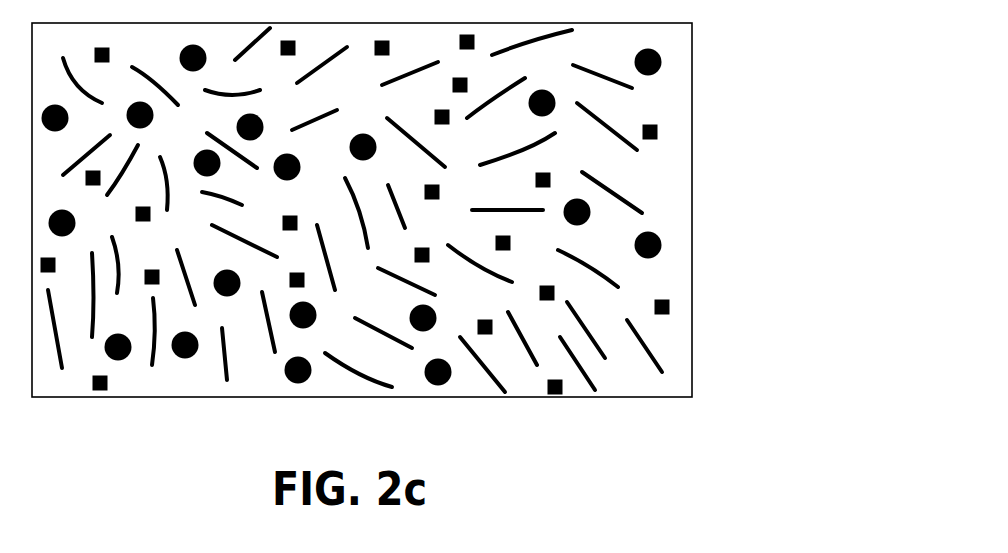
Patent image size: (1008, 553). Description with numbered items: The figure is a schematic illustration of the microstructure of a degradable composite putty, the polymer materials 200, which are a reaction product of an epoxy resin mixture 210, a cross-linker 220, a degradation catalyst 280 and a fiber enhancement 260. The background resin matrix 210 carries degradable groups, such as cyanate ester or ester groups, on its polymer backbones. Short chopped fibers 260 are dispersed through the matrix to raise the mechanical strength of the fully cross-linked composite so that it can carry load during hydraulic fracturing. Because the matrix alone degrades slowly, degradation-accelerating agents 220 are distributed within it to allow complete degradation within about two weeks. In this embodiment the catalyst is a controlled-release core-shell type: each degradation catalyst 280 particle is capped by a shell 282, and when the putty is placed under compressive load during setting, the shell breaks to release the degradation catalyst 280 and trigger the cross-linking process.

The polymer materials 200 is at (464, 210).
The resin matrix 210 is at (668, 175).
The degradation catalyst 280 is at (766, 218).
The shell 282 is at (662, 250).
The cross-linker 220 is at (672, 305).
The fiber enhancement 260 is at (663, 357).